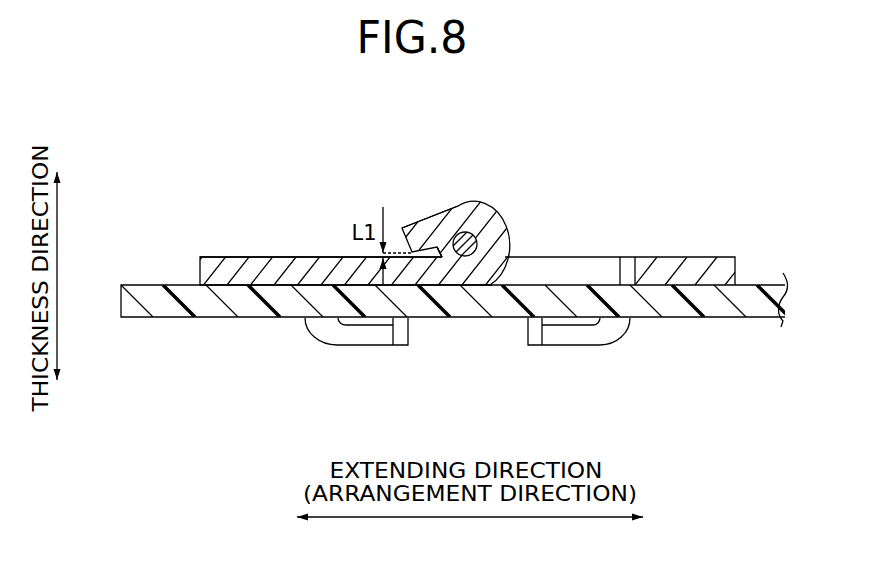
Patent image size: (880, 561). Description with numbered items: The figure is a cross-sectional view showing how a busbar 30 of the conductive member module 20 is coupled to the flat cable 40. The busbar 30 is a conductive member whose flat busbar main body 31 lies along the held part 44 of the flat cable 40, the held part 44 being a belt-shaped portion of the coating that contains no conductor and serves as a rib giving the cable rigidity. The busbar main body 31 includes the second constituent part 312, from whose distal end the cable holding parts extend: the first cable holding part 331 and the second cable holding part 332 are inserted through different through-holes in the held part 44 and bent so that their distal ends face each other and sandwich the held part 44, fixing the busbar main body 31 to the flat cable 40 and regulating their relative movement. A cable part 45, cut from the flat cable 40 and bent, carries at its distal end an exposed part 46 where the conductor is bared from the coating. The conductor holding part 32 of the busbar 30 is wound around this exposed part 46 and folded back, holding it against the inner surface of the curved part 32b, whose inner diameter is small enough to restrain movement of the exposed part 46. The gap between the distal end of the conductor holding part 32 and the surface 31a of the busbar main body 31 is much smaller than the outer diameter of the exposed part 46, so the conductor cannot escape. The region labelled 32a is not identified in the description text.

The conductive member module 20 is at (153, 146).
The busbar 30 is at (228, 233).
The busbar main body 31 is at (278, 251).
The second constituent part 312 is at (328, 251).
The surface of the busbar main body 31a is at (678, 257).
The conductor holding part 32 is at (441, 208).
The base of folded portion 32a is at (476, 270).
The curved part 32b is at (496, 217).
The exposed part 46 is at (481, 229).
The cable part 45 is at (447, 260).
The flat cable 40 is at (756, 282).
The held part 44 is at (228, 321).
The first cable holding part 331 is at (557, 349).
The second cable holding part 332 is at (358, 348).